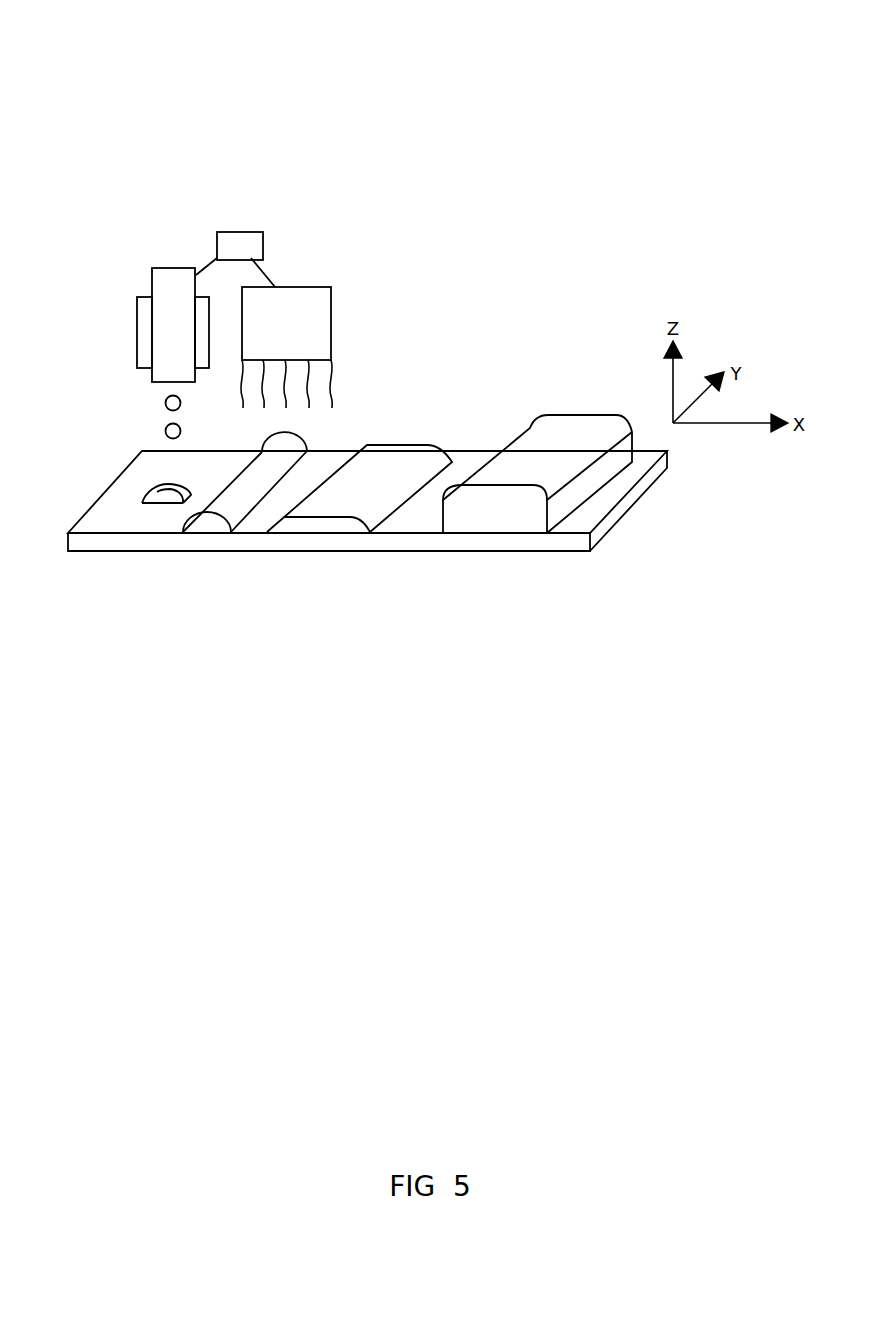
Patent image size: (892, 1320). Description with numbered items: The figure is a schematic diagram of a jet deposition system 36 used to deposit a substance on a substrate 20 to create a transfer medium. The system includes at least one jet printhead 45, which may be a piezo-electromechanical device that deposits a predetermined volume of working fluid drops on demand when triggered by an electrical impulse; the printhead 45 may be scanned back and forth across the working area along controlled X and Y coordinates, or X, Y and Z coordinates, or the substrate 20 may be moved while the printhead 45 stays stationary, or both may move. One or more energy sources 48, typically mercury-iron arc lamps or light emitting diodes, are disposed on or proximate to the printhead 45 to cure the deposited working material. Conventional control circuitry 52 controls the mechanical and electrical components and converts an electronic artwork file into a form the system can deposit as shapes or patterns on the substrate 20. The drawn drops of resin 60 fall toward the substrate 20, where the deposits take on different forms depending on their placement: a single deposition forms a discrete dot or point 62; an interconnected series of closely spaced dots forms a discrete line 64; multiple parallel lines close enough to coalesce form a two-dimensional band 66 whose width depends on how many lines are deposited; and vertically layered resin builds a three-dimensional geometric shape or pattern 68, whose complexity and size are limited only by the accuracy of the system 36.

The jet deposition system 36 is at (343, 106).
The substrate 20 is at (630, 498).
The jet printhead 45 is at (151, 277).
The control circuitry 52 is at (237, 229).
The energy sources 48 is at (331, 287).
The resin 60 is at (165, 434).
The dot or point 62 is at (160, 507).
The line 64 is at (197, 533).
The band 66 is at (333, 525).
The three-dimensional geometric shape or pattern 68 is at (483, 527).